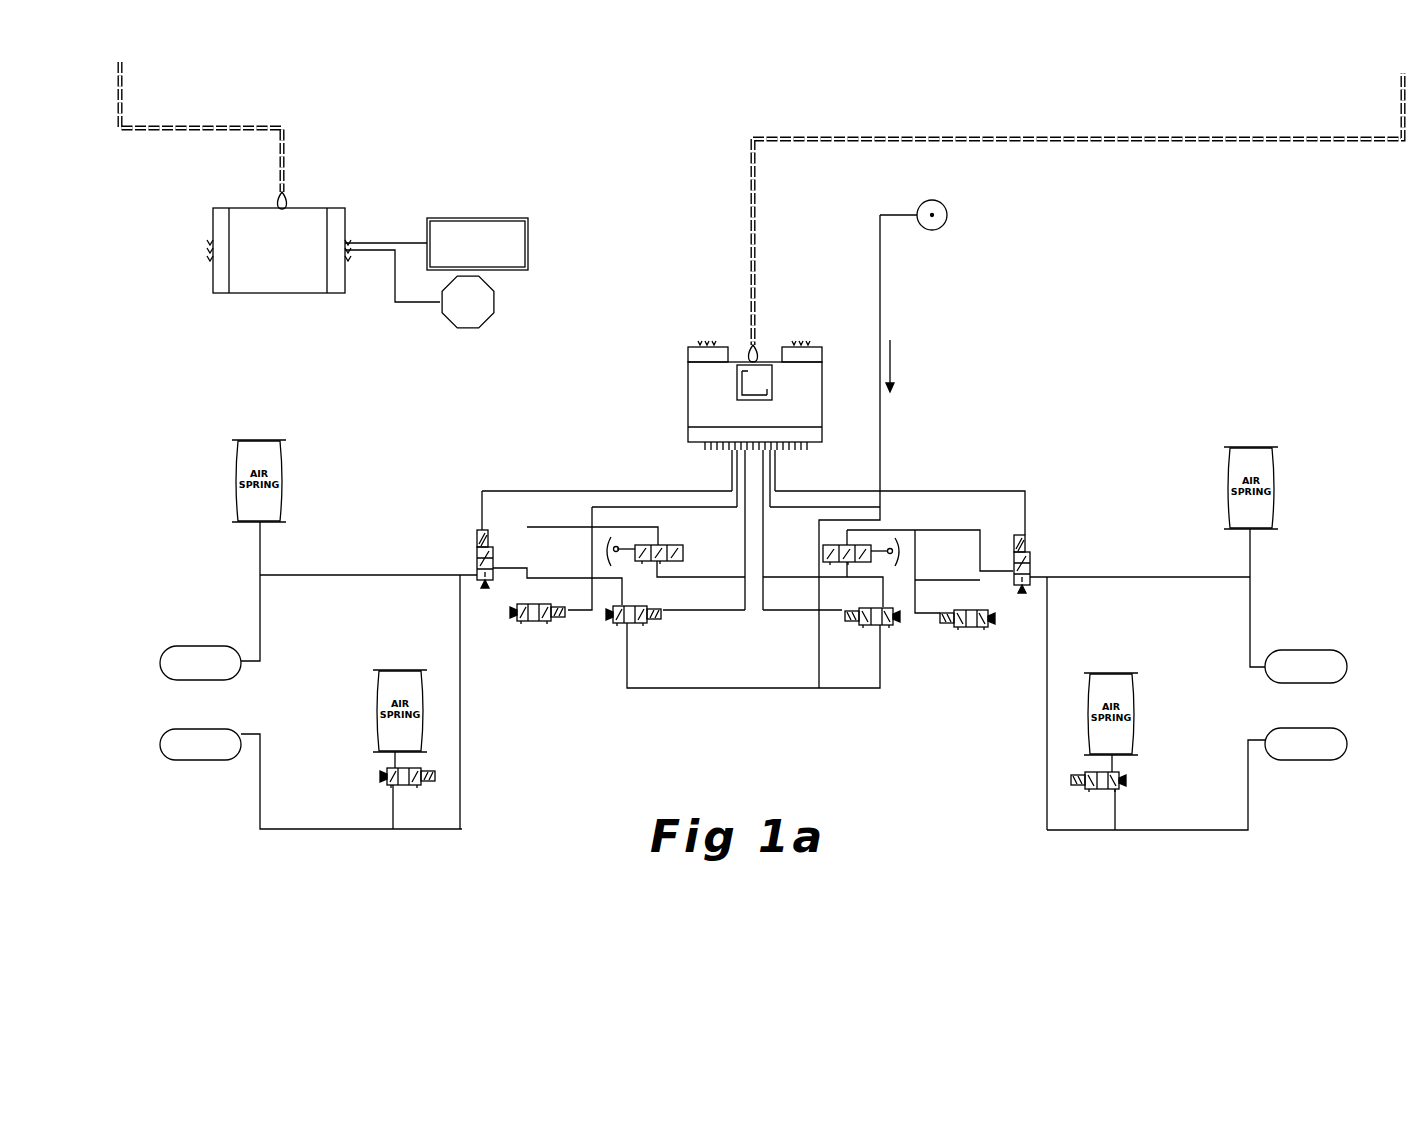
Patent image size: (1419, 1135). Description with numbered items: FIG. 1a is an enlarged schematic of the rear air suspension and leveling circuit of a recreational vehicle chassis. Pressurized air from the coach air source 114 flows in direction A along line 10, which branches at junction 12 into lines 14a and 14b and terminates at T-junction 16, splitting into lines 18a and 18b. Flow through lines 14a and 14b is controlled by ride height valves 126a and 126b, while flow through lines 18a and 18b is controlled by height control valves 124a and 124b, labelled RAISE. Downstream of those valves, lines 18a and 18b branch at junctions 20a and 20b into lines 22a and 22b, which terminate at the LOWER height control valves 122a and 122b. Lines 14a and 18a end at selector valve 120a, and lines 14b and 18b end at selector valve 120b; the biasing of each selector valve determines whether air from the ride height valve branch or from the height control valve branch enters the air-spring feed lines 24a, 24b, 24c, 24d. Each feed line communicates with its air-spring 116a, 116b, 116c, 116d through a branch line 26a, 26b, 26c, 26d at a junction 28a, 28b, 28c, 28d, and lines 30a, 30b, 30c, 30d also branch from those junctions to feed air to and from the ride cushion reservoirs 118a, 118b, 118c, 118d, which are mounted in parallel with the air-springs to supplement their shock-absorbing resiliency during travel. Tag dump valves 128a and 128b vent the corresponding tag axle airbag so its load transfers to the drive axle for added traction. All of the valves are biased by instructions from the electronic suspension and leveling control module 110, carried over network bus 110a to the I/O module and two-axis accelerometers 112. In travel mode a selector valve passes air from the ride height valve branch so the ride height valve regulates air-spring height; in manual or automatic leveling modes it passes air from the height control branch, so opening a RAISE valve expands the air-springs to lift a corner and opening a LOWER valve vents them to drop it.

The line 10 is at (880, 322).
The junction 12 is at (810, 580).
The line 14a is at (698, 578).
The line 14b is at (848, 552).
The T-junction 16 is at (819, 700).
The line 18a is at (670, 690).
The line 18b is at (850, 690).
The junction 20a is at (557, 558).
The junction 20b is at (985, 583).
The line 22a is at (527, 590).
The line 22b is at (982, 587).
The air-spring feed line 24a is at (311, 575).
The air-spring feed line 24b is at (460, 740).
The air-spring feed line 24c is at (1113, 577).
The air-spring feed line 24d is at (1047, 715).
The branch line 26a is at (258, 551).
The branch line 26b is at (391, 808).
The branch line 26c is at (1252, 552).
The branch line 26d is at (1115, 808).
The junction 28a is at (260, 575).
The junction 28b is at (394, 831).
The junction 28c is at (1252, 577).
The junction 28d is at (1110, 832).
The line 30a is at (262, 611).
The line 30b is at (319, 831).
The line 30c is at (1252, 618).
The line 30d is at (1203, 833).
The control module 110 is at (329, 208).
The network bus 110a is at (284, 153).
The I/O module and X, Y axis accelerometers 112 is at (708, 388).
The coach air source 114 is at (940, 228).
The left rear air-spring 116a is at (270, 451).
The left rear air-spring 116b is at (387, 691).
The right rear air-spring 116c is at (1250, 455).
The right rear air-spring 116d is at (1125, 700).
The left rear ride cushion reservoir 118a is at (211, 661).
The left rear ride cushion reservoir 118b is at (206, 744).
The right rear ride cushion reservoir 118c is at (1323, 665).
The right rear ride cushion reservoir 118d is at (1323, 750).
The selector valve 120a is at (490, 547).
The selector valve 120b is at (1015, 540).
The height control valve 122a is at (527, 623).
The height control valve 122b is at (970, 628).
The height control valve 124a is at (638, 625).
The height control valve 124b is at (877, 626).
The valve 126a is at (657, 545).
The valve 126b is at (843, 547).
The tag dump valve 128a is at (435, 777).
The tag dump valve 128b is at (1102, 740).